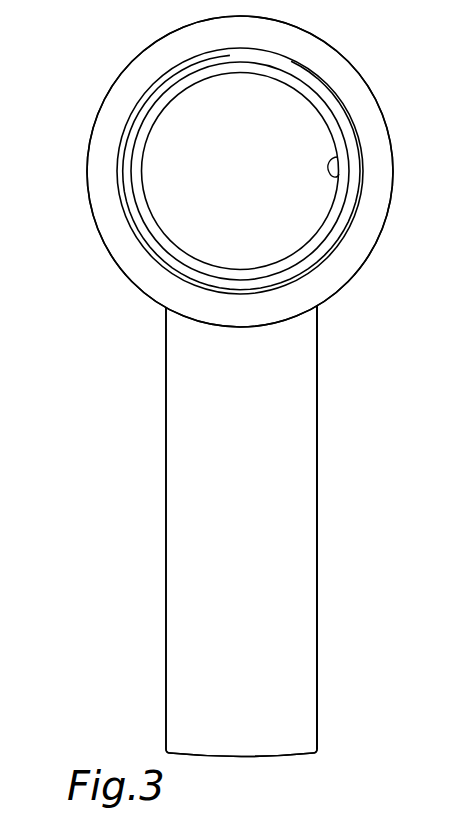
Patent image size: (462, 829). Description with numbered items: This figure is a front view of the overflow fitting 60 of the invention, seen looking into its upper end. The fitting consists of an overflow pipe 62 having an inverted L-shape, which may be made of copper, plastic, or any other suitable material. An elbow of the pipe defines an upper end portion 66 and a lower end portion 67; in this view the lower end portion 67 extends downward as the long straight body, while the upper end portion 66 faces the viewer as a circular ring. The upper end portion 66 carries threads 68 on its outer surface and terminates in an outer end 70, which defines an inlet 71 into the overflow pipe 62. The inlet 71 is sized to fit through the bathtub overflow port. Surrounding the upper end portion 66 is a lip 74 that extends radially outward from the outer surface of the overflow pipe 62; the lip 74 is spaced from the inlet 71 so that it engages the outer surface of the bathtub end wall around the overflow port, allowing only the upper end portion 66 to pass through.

The overflow fitting 60 is at (350, 520).
The overflow pipe 62 is at (302, 623).
The upper end portion 66 is at (351, 292).
The lower end portion 67 is at (333, 452).
The threads 68 is at (128, 137).
The outer end 70 is at (330, 109).
The inlet 71 is at (338, 157).
The lip 74 is at (172, 34).